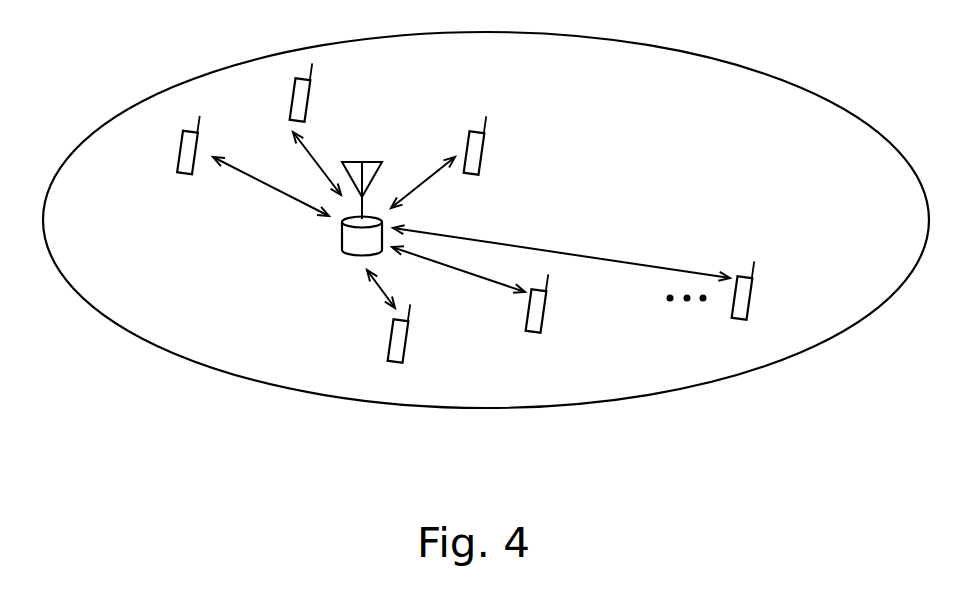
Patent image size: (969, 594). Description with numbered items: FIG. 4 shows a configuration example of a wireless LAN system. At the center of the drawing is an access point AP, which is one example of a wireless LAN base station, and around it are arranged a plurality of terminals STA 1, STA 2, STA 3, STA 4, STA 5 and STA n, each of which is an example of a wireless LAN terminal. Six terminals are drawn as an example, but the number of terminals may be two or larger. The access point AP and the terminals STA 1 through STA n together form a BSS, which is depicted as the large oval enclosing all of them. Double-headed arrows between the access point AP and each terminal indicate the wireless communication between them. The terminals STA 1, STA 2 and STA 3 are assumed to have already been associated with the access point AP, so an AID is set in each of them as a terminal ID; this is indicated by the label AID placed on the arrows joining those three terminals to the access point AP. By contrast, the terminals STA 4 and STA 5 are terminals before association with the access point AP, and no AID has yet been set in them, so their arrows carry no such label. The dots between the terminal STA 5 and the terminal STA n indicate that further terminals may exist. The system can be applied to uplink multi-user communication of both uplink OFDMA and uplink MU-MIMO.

The element BSS is at (486, 220).
The access point AP is at (342, 250).
The element AID is at (339, 174).
The terminal STA 1 is at (181, 164).
The terminal STA 2 is at (306, 84).
The terminal STA 3 is at (480, 145).
The terminal STA 4 is at (404, 356).
The terminal STA 5 is at (541, 320).
The terminal STA n is at (747, 290).